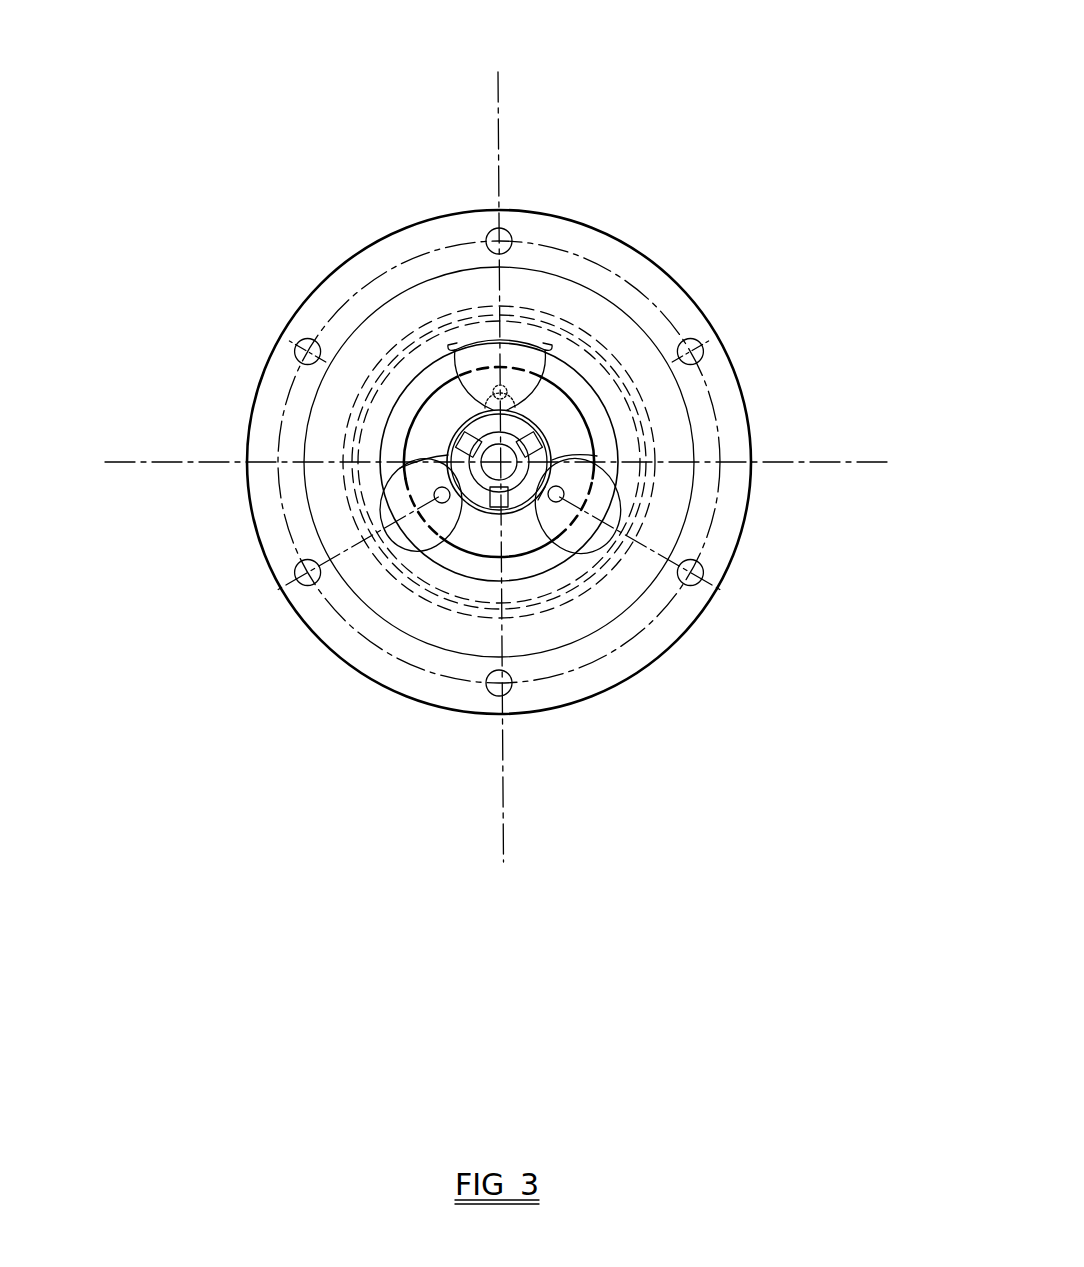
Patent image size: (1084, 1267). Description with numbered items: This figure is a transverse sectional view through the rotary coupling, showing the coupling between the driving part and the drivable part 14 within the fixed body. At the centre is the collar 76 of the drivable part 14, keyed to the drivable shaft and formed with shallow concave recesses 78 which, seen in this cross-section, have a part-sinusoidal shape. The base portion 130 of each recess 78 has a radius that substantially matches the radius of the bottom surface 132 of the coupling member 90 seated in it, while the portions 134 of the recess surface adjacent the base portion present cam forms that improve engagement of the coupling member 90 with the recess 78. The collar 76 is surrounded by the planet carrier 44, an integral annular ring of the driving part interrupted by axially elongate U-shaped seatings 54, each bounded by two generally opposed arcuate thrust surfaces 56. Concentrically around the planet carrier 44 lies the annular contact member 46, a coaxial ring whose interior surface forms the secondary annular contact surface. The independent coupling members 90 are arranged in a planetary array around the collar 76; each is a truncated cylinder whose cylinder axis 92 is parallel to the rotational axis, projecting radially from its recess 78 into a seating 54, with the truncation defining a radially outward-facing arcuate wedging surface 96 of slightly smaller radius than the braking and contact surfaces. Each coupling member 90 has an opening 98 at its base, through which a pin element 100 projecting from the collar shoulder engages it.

The drivable part 14 is at (528, 503).
The planet carrier 44 is at (436, 392).
The annular contact member 46 is at (360, 383).
The U-shaped seating 54 is at (458, 353).
The arcuate thrust surface 56 is at (462, 355).
The collar 76 is at (538, 505).
The concave recess 78 is at (727, 577).
The coupling member 90 is at (415, 540).
The cylinder axis 92 is at (423, 545).
The wedging surface 96 is at (445, 530).
The opening 98 is at (545, 550).
The pin element 100 is at (442, 500).
The base portion 130 is at (512, 544).
The bottom surface 132 is at (448, 448).
The cam form portions 134 is at (456, 405).